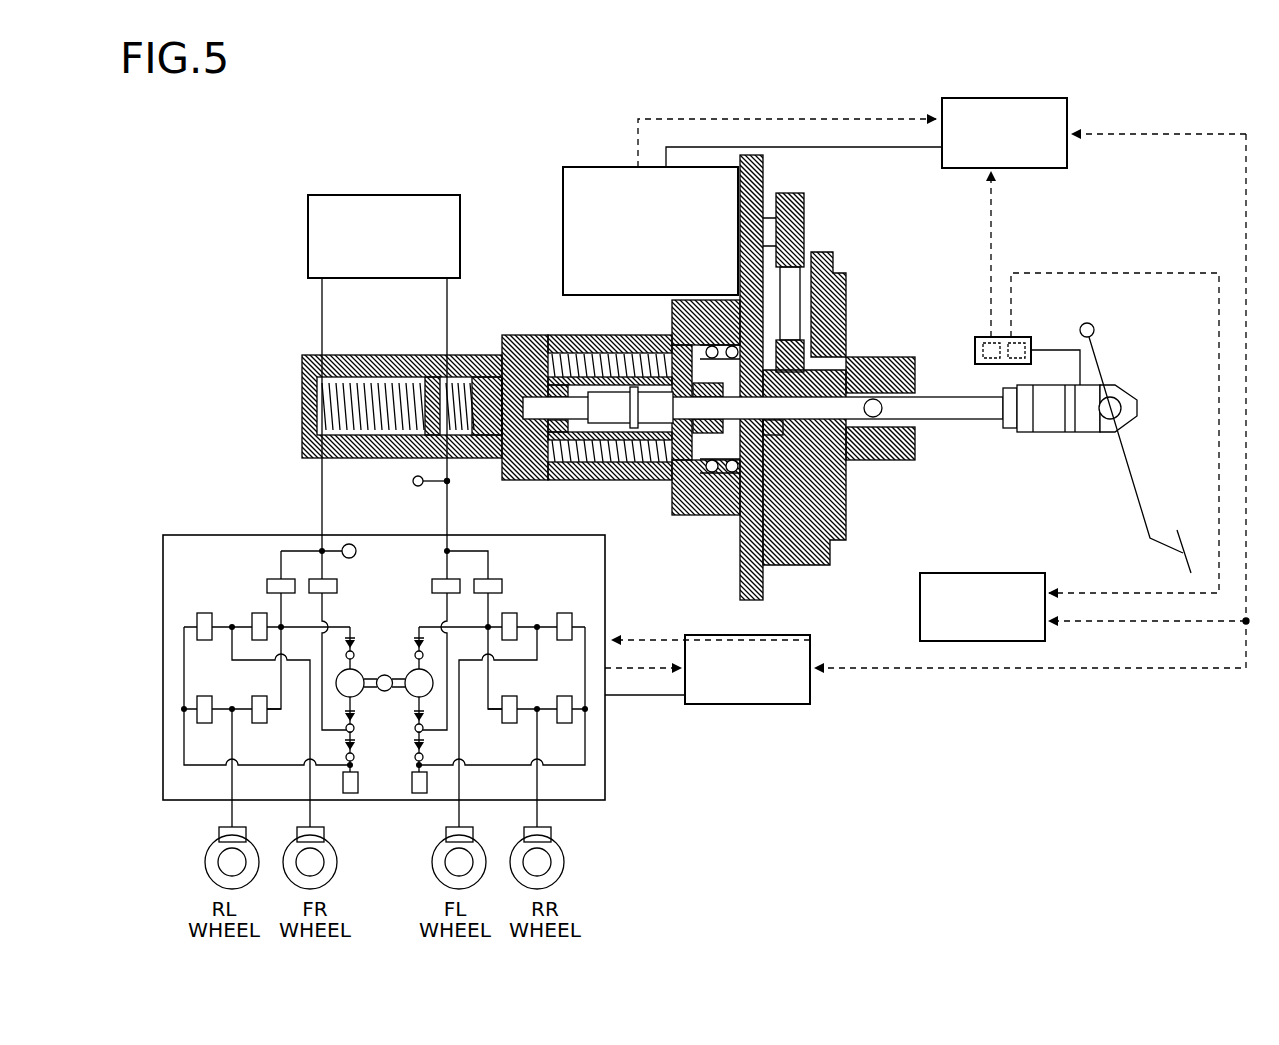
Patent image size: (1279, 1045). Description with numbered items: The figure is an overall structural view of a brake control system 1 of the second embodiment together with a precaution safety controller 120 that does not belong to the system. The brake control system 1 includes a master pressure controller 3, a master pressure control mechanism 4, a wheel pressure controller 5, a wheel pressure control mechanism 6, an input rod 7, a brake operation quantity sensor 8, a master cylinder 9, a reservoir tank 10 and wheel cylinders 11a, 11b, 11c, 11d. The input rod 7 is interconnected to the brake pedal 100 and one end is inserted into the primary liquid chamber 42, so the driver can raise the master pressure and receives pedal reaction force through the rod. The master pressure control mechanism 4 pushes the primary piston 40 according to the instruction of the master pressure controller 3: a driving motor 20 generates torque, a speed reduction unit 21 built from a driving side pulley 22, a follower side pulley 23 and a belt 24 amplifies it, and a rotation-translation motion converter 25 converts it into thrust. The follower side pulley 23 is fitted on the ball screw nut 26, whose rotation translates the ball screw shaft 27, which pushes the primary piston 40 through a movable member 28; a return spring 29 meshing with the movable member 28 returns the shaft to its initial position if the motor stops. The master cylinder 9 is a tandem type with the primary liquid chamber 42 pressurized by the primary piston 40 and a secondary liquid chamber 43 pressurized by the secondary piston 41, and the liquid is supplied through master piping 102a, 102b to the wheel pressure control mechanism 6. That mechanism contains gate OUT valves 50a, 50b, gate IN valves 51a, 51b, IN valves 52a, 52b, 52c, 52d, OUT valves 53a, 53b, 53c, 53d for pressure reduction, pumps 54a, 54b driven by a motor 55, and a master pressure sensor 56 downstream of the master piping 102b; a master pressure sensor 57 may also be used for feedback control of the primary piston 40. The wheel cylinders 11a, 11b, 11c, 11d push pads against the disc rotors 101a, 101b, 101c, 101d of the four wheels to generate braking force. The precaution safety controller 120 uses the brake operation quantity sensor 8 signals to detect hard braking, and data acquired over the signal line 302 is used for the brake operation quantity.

The brake control system 1 is at (743, 108).
The master pressure controller 3 is at (988, 97).
The master pressure control mechanism 4 is at (872, 201).
The wheel pressure controller 5 is at (710, 634).
The wheel pressure control mechanism 6 is at (603, 535).
The input rod 7 is at (949, 420).
The brake operation quantity sensor 8 is at (1025, 336).
The master cylinder 9 is at (340, 355).
The reservoir tank 10 is at (373, 194).
The wheel cylinder 11a is at (471, 827).
The wheel cylinder 11b is at (307, 827).
The wheel cylinder 11c is at (229, 827).
The wheel cylinder 11d is at (549, 827).
The driving motor 20 is at (588, 167).
The speed reduction unit 21 is at (808, 203).
The driving side pulley 22 is at (806, 238).
The follower side pulley 23 is at (846, 523).
The belt 24 is at (790, 193).
The rotation-translation motion converter 25 is at (778, 566).
The ball screw nut 26 is at (847, 332).
The ball screw shaft 27 is at (901, 358).
The movable member 28 is at (686, 515).
The return spring 29 is at (596, 352).
The primary piston 40 is at (528, 343).
The secondary piston 41 is at (396, 355).
The primary liquid chamber 42 is at (462, 458).
The secondary liquid chamber 43 is at (340, 458).
The gate OUT valve 50a is at (498, 579).
The gate OUT valve 50b is at (281, 580).
The gate IN valve 51a is at (445, 579).
The gate IN valve 51b is at (336, 593).
The IN valve 52a is at (514, 613).
The IN valve 52b is at (260, 613).
The IN valve 52c is at (262, 723).
The IN valve 52d is at (511, 724).
The OUT valve 53a is at (565, 613).
The OUT valve 53b is at (202, 613).
The OUT valve 53c is at (205, 696).
The OUT valve 53d is at (564, 696).
The pump 54a is at (410, 715).
The pump 54b is at (361, 700).
The motor 55 is at (385, 675).
The master pressure sensor 56 is at (355, 558).
The master pressure sensor 57 is at (418, 486).
The brake pedal 100 is at (1128, 468).
The disc rotor 101a is at (432, 864).
The disc rotor 101b is at (334, 843).
The disc rotor 101c is at (205, 862).
The disc rotor 101d is at (564, 862).
The master piping 102a is at (450, 526).
The master piping 102b is at (319, 526).
The precaution safety controller 120 is at (983, 572).
The signal line 302 is at (1126, 669).